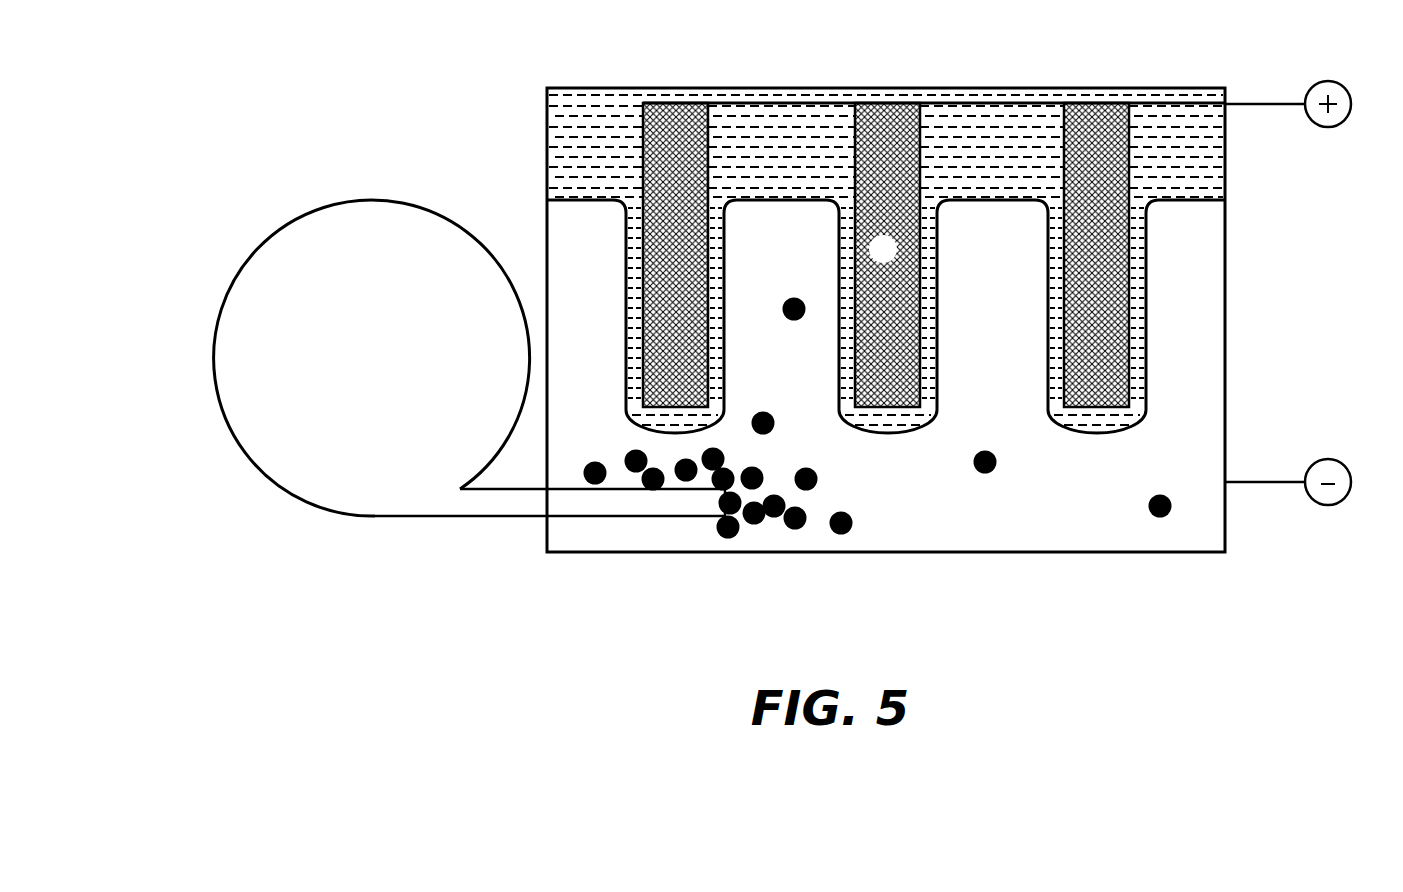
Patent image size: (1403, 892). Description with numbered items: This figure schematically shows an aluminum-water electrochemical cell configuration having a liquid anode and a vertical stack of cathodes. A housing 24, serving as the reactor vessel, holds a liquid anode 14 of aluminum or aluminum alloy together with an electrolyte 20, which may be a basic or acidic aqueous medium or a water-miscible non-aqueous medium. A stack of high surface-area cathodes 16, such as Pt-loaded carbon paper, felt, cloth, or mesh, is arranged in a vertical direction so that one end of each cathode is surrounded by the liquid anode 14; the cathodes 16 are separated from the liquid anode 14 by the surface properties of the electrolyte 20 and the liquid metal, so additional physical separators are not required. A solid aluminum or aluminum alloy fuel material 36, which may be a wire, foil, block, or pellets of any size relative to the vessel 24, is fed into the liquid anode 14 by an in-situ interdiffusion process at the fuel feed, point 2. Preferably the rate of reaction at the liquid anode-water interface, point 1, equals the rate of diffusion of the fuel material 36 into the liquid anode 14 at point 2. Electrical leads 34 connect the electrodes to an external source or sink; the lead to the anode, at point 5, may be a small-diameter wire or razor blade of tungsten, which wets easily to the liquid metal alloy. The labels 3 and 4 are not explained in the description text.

The liquid anode-water interface point 1 is at (766, 287).
The fuel feed point 2 is at (776, 475).
The electrode 3 is at (883, 249).
The fluid 4 is at (376, 367).
The anode lead point 5 is at (1175, 490).
The anode 14 is at (567, 262).
The cathode 16 is at (676, 125).
The electrolyte 20 is at (782, 130).
The housing 24 is at (1226, 320).
The electrical lead 34 is at (1331, 81).
The solid aluminum or aluminum alloy material 36 is at (272, 240).